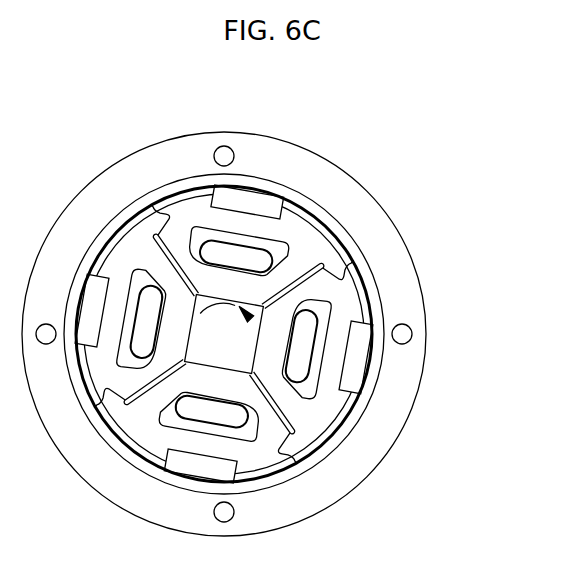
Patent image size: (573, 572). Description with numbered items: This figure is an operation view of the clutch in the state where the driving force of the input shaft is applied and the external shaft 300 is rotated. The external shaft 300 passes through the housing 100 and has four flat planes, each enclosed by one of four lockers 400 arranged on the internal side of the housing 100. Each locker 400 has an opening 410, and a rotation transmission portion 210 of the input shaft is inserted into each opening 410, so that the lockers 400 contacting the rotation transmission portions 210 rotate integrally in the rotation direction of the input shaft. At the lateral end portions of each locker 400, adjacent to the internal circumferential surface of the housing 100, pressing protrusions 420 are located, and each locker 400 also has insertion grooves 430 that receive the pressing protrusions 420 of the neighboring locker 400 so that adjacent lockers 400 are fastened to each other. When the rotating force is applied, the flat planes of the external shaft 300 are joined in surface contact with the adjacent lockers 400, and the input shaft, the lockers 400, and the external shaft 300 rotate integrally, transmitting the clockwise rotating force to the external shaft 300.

The housing 100 is at (293, 163).
The rotation transmission portion 210 is at (218, 245).
The external shaft 300 is at (247, 332).
The locker 400 is at (297, 228).
The opening 410 is at (238, 206).
The pressing protrusion 420 is at (340, 258).
The insertion groove 430 is at (350, 262).